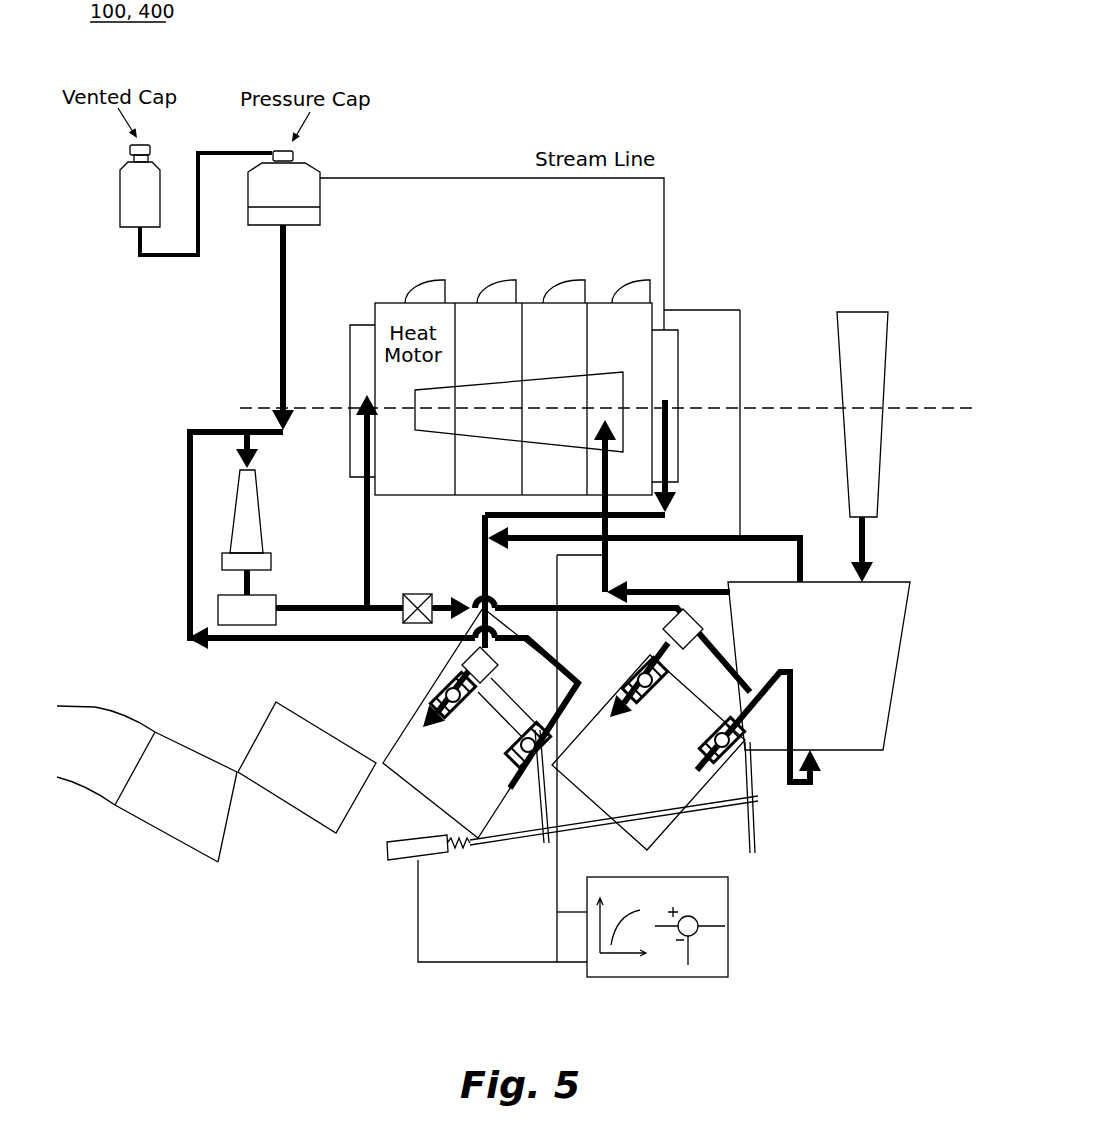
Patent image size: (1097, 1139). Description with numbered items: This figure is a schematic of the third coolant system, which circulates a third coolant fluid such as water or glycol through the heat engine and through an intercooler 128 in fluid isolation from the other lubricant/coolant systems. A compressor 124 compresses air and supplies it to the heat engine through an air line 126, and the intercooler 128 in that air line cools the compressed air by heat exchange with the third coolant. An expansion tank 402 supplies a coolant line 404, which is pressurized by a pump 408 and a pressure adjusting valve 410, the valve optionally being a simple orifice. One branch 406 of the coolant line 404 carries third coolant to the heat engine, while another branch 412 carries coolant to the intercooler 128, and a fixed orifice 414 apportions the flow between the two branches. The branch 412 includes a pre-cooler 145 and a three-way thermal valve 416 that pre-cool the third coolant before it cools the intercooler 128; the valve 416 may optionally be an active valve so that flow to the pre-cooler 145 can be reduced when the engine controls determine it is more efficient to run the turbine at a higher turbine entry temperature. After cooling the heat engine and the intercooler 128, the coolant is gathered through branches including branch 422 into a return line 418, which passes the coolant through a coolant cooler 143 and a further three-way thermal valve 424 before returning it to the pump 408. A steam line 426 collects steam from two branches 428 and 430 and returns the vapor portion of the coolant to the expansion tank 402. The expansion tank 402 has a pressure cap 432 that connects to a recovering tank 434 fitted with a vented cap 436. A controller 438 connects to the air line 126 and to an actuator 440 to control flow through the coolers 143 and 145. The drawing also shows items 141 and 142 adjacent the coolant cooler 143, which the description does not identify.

The vented cap 436 is at (128, 153).
The recovering tank 434 is at (128, 190).
The pressure cap 432 is at (296, 158).
The expansion tank 402 is at (268, 218).
The steam line 426 is at (665, 198).
The coolant line 404 is at (283, 318).
The return line 418 is at (190, 510).
The pump 408 is at (262, 515).
The pressure adjusting valve 410 is at (277, 622).
The branch 406 is at (367, 527).
The branch 412 is at (392, 603).
The fixed orifice 414 is at (420, 593).
The branch 428 is at (665, 320).
The branch 430 is at (740, 358).
The branch 422 is at (528, 512).
The compressor 124 is at (886, 370).
The air line 126 is at (672, 590).
The intercooler 128 is at (905, 645).
The coolant cooler 143 is at (408, 720).
The three-way thermal valve 424 is at (462, 662).
The pre-cooler 145 is at (672, 830).
The three-way thermal valve 416 is at (664, 627).
The air duct 141 is at (217, 862).
The air duct section 142 is at (326, 826).
The actuator 440 is at (437, 862).
The controller 438 is at (728, 912).